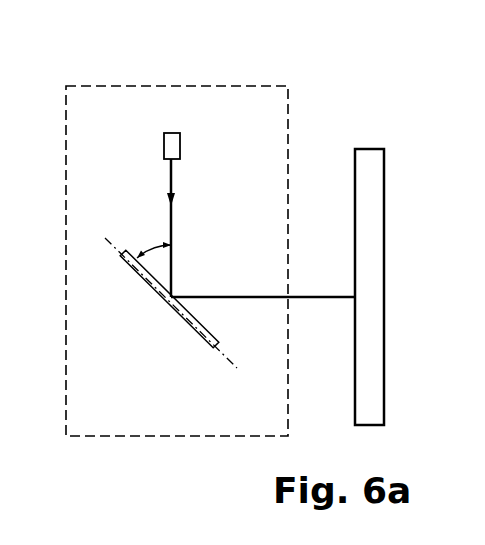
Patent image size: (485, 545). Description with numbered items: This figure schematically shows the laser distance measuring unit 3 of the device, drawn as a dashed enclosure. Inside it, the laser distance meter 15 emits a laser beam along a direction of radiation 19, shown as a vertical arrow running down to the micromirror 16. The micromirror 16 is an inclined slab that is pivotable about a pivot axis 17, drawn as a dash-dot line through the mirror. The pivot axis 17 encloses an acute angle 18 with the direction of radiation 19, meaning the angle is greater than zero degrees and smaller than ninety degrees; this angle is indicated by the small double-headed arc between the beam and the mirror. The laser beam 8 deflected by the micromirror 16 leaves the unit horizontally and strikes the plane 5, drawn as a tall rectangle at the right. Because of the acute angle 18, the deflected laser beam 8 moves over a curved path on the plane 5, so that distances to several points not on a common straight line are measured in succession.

The laser distance measuring unit 3 is at (213, 107).
The plane 5 is at (368, 158).
The laser beam 8 is at (318, 295).
The laser distance meter 15 is at (168, 145).
The micromirror 16 is at (140, 277).
The pivot axis 17 is at (237, 368).
The acute angle 18 is at (153, 244).
The direction of radiation 19 is at (171, 188).